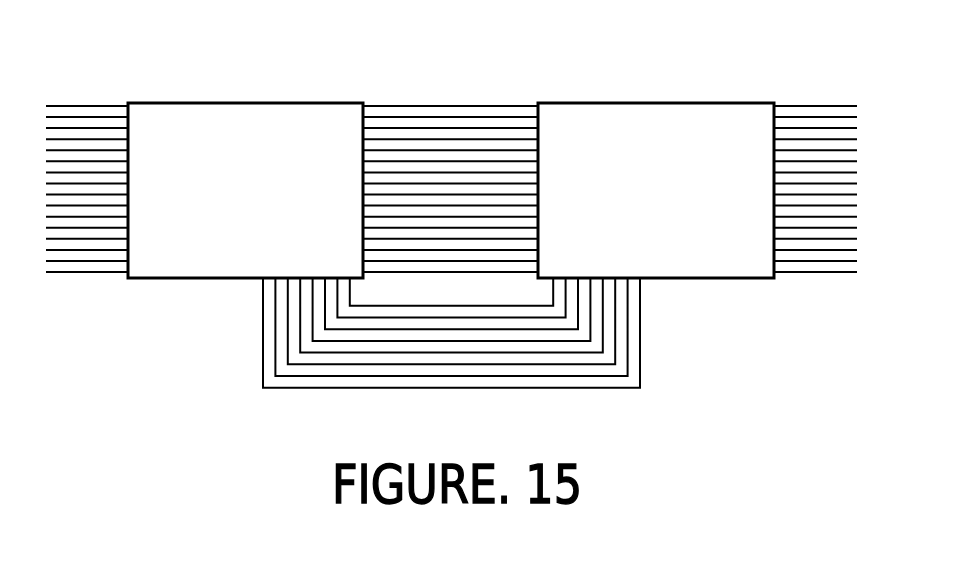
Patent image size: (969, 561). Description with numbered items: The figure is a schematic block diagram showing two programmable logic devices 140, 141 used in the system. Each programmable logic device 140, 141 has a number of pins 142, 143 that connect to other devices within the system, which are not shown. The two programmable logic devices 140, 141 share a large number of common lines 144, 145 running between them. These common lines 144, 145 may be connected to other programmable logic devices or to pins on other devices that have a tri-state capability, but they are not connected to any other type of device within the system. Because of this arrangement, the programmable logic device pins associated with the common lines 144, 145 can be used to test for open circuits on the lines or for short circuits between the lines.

The programmable logic device 140 is at (267, 101).
The programmable logic device 141 is at (678, 101).
The pins 142 is at (82, 103).
The pins 143 is at (818, 105).
The common lines 144 is at (447, 105).
The common lines 145 is at (452, 392).